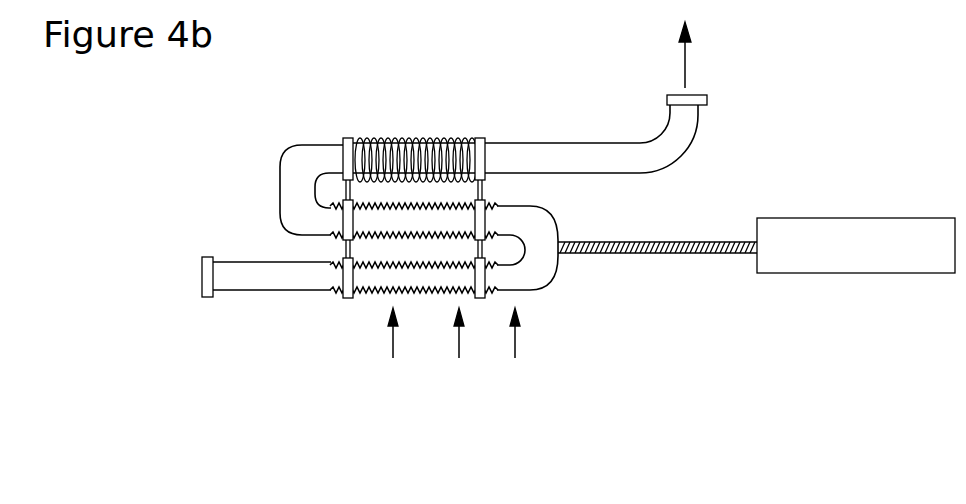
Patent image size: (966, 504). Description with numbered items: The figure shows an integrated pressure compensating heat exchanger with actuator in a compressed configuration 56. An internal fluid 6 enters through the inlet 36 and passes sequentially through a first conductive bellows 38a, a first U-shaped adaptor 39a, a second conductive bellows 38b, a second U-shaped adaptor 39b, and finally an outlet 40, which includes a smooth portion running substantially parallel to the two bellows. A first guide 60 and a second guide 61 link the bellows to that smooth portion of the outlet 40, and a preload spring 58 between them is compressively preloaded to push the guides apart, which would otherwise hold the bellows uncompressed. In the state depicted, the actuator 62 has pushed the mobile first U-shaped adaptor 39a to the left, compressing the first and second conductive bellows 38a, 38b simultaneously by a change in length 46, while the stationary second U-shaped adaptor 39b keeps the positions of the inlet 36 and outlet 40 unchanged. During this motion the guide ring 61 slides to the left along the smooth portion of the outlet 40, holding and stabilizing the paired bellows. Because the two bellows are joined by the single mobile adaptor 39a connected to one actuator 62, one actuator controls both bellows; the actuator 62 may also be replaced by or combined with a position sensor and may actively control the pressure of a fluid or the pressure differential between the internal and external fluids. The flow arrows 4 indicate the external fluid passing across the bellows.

The integrated pressure compensating heat exchanger with actuator in a compressed co 56 is at (246, 130).
The internal fluid 6 is at (192, 277).
The inlet 36 is at (207, 257).
The first conductive bellows 38a is at (370, 295).
The second conductive bellows 38b is at (414, 210).
The first U-shaped adaptor 39a is at (563, 200).
The second U-shaped adaptor 39b is at (280, 180).
The preload spring 58 is at (405, 137).
The first guide 60 is at (351, 138).
The second guide 61 is at (478, 138).
The outlet 40 is at (700, 95).
The actuator 62 is at (818, 218).
The change in length 46 is at (710, 267).
The cooling air flow 4 is at (454, 351).